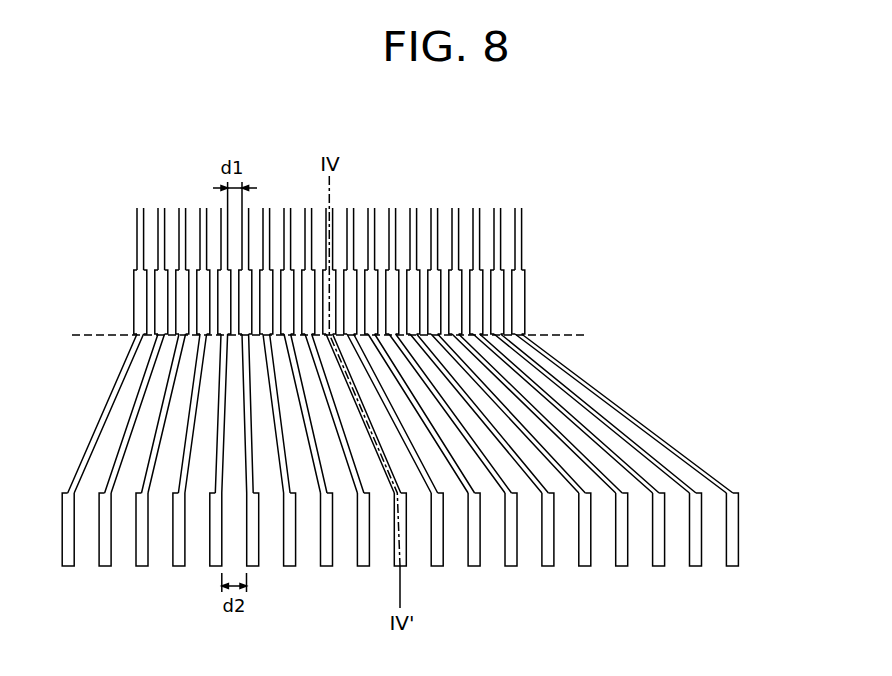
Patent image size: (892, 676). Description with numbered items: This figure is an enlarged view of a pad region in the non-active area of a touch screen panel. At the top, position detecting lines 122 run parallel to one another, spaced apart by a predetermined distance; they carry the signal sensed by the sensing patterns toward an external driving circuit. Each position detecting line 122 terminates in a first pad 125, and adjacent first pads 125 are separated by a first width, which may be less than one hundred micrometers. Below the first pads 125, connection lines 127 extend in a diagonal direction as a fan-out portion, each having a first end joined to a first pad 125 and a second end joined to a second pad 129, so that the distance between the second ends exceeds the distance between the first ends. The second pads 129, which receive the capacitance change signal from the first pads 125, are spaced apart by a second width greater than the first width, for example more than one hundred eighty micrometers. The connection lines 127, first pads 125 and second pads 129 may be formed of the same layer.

The position detecting lines 122 is at (518, 239).
The first pads 125 is at (521, 298).
The connection line 127 is at (632, 417).
The second pads 129 is at (737, 530).